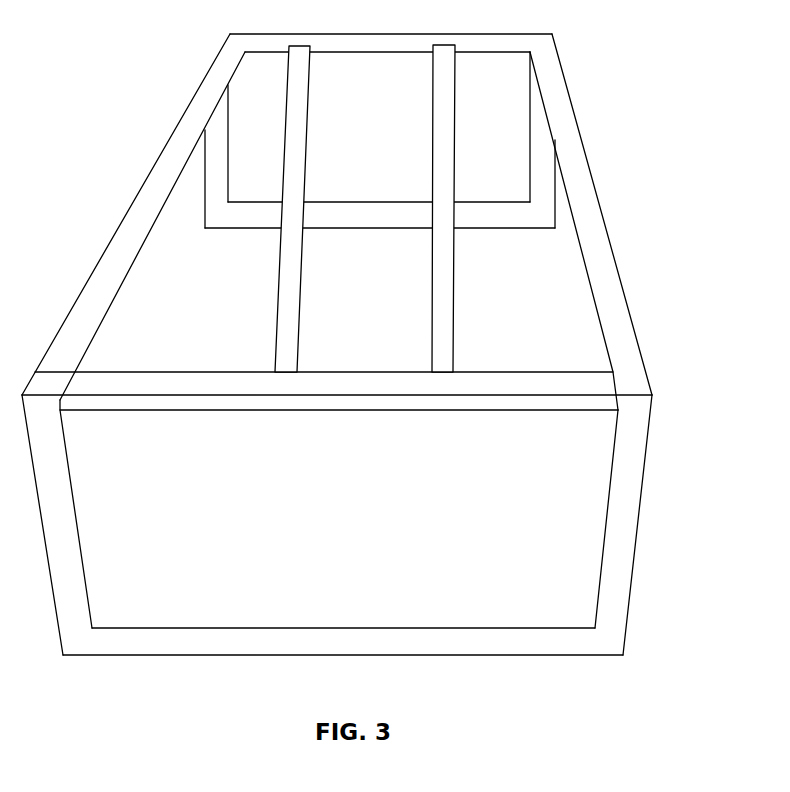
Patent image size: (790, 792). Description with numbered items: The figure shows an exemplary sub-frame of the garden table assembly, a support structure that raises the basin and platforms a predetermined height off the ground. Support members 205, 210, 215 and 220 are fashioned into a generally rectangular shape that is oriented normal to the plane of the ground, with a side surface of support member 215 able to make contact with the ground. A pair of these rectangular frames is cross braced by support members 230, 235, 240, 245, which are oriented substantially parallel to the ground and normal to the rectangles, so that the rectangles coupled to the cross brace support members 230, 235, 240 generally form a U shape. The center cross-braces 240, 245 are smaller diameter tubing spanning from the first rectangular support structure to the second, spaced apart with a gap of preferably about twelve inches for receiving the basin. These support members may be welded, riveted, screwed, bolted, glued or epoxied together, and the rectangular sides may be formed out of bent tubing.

The support member 205 is at (222, 133).
The support member 210 is at (540, 128).
The support member 215 is at (354, 212).
The support member 220 is at (390, 43).
The cross brace support member 230 is at (594, 223).
The cross brace support member 235 is at (146, 210).
The smaller diameter tubing 240 is at (287, 308).
The smaller diameter tubing 245 is at (442, 313).